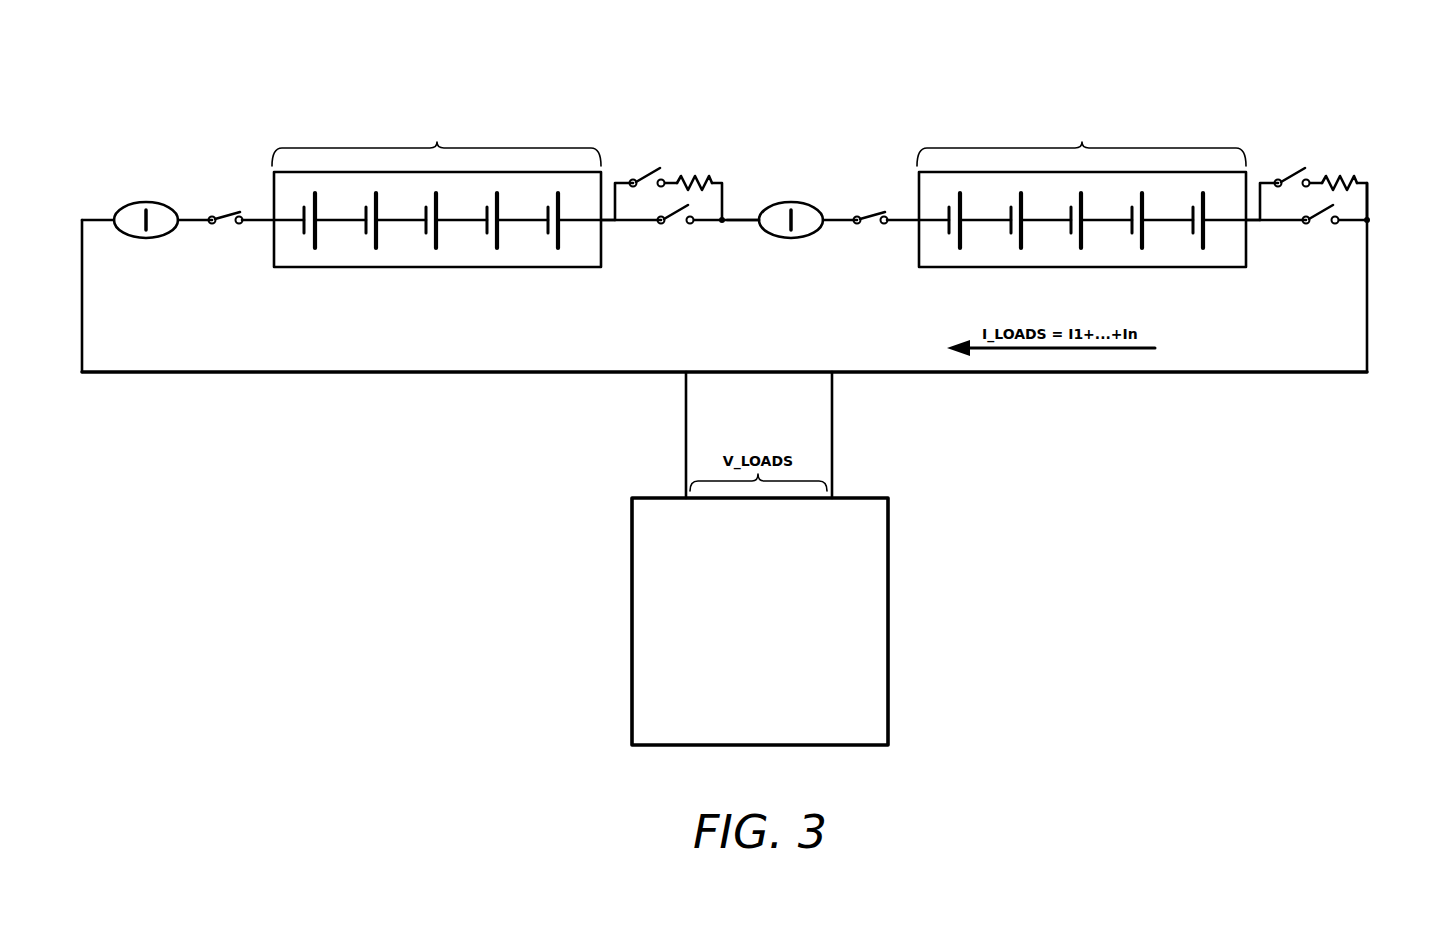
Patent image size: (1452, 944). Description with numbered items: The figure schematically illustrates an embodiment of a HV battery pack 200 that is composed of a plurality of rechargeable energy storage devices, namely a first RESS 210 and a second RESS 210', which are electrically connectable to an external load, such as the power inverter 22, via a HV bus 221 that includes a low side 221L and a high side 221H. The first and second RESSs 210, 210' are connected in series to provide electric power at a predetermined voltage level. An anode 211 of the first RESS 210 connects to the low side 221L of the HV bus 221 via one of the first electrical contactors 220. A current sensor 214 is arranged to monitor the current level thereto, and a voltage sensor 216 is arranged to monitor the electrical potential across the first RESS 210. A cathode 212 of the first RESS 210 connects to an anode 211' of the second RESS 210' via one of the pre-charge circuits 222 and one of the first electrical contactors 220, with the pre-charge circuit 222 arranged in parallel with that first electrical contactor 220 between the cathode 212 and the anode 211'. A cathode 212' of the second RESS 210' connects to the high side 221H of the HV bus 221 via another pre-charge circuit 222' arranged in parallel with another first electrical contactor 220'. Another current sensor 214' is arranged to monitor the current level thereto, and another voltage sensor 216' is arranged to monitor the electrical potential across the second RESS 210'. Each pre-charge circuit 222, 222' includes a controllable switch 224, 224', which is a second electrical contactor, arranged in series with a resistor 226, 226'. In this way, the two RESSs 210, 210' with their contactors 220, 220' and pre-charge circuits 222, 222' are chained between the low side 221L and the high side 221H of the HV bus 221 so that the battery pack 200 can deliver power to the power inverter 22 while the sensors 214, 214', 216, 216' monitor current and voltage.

The HV battery pack 200 is at (258, 108).
The current sensor 214 is at (168, 188).
The anode 211 is at (231, 250).
The voltage sensor 216 is at (436, 177).
The rechargeable energy storage device 210 is at (437, 169).
The controllable switch 224 is at (630, 136).
The resistor 226 is at (682, 131).
The pre-charge circuit 222 is at (689, 151).
The first electrical contactor 220 is at (685, 241).
The cathode 212 is at (637, 263).
The current sensor 214' is at (816, 188).
The anode 211' is at (875, 250).
The voltage sensor 216' is at (1081, 177).
The rechargeable energy storage device 210' is at (1082, 167).
The controllable switch 224' is at (1276, 140).
The resistor 226' is at (1326, 128).
The pre-charge circuit 222' is at (1340, 155).
The first electrical contactor 220' is at (1333, 241).
The cathode 212' is at (1288, 265).
The HV bus 221 is at (749, 354).
The low side 221L is at (686, 452).
The high side 221H is at (832, 452).
The power inverter 22 is at (745, 633).